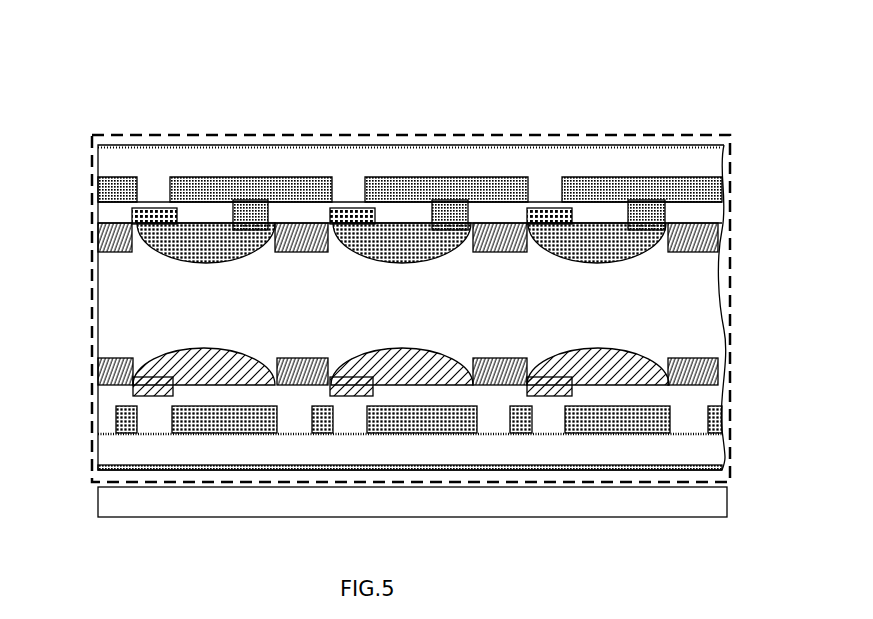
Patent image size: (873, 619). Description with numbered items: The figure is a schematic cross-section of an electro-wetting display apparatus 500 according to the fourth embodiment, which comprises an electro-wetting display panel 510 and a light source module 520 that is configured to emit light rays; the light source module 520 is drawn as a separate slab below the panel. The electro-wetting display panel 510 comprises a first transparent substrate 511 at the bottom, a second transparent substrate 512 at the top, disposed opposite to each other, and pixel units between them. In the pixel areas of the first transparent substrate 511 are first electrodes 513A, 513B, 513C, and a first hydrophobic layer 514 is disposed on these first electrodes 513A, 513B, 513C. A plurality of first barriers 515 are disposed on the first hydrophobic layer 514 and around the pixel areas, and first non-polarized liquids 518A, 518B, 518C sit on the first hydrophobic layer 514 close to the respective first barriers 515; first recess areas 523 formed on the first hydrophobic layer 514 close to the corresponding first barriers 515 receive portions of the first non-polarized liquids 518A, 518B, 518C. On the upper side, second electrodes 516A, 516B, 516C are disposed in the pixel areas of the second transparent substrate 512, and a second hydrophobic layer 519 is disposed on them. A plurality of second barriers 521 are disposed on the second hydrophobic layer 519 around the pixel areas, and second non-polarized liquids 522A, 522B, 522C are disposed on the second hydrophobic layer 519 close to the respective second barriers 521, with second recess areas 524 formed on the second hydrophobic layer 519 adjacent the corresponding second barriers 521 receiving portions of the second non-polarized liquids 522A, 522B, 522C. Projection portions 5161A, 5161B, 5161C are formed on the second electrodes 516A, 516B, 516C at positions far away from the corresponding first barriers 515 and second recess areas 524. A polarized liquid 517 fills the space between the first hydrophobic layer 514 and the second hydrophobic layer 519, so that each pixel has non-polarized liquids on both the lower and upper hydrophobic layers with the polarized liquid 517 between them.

The electro-wetting display apparatus 500 is at (180, 83).
The electro-wetting display panel 510 is at (361, 140).
The first transparent substrate 511 is at (700, 458).
The second transparent substrate 512 is at (700, 160).
The first electrode 513A is at (207, 416).
The first electrode 513B is at (660, 432).
The first electrode 513C is at (442, 427).
The first hydrophobic layer 514 is at (117, 415).
The first barrier 515 is at (125, 368).
The second electrode 516A is at (203, 185).
The second electrode 516B is at (637, 237).
The second electrode 516C is at (700, 187).
The projection portion 5161A is at (257, 218).
The projection portion 5161B is at (447, 230).
The projection portion 5161C is at (643, 228).
The polarized liquid 517 is at (687, 292).
The first non-polarized liquid 518A is at (193, 358).
The first non-polarized liquid 518B is at (390, 358).
The first non-polarized liquid 518C is at (583, 360).
The second hydrophobic layer 519 is at (117, 213).
The light source module 520 is at (113, 510).
The second barrier 521 is at (125, 233).
The second non-polarized liquid 522A is at (240, 247).
The second non-polarized liquid 522B is at (447, 237).
The second non-polarized liquid 522C is at (640, 240).
The first recess area 523 is at (130, 392).
The second recess area 524 is at (150, 218).